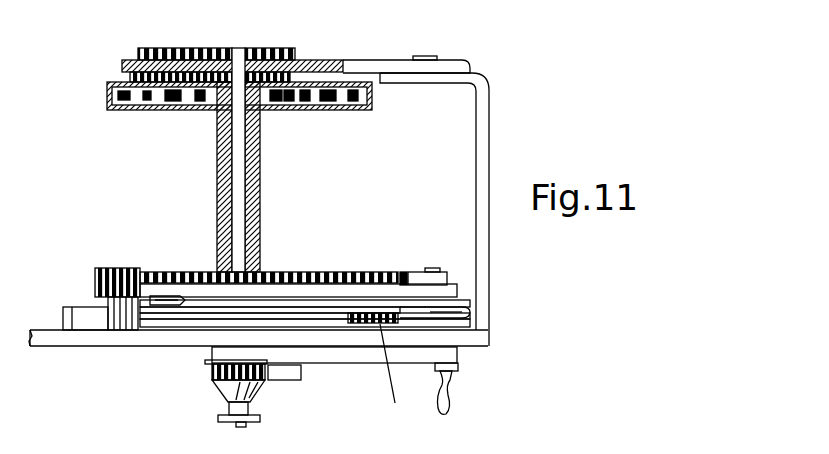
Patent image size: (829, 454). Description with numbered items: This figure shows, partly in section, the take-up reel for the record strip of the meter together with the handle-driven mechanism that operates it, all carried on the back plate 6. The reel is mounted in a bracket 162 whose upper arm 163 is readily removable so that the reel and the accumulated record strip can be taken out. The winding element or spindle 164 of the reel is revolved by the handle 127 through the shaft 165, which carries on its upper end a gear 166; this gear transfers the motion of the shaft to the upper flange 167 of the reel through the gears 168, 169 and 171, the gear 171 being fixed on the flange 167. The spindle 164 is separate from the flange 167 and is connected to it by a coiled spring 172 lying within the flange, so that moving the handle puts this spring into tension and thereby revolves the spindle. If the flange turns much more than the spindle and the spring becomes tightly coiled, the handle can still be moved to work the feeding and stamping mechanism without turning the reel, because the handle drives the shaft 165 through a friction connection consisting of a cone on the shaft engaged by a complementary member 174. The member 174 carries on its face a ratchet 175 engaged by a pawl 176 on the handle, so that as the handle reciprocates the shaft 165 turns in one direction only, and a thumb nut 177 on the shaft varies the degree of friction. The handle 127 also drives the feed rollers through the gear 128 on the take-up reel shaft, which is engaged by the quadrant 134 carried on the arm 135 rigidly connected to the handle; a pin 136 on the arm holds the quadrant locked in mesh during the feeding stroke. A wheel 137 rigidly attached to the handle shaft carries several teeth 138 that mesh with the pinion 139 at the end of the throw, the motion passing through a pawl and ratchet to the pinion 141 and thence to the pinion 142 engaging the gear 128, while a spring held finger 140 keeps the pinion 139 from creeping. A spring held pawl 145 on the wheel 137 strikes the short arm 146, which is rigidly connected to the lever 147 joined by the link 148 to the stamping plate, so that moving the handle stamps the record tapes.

The back plate 6 is at (131, 340).
The handle 127 is at (358, 364).
The gear 128 is at (342, 263).
The quadrant 134 is at (420, 280).
The arm 135 is at (418, 292).
The pin 136 is at (404, 272).
The wheel 137 is at (177, 318).
The teeth 138 is at (399, 376).
The pinion 139 is at (112, 332).
The spring held finger 140 is at (110, 313).
The pinion 141 is at (134, 270).
The pinion 142 is at (105, 268).
The spring held pawl 145 is at (397, 323).
The short arm 146 is at (423, 322).
The lever 147 is at (432, 312).
The link 148 is at (160, 288).
The bracket 162 is at (488, 122).
The upper arm 163 is at (392, 65).
The spindle 164 is at (260, 168).
The shaft 165 is at (235, 192).
The gear 166 is at (268, 49).
The upper flange 167 is at (108, 95).
The gear 168 is at (178, 41).
The gear 169 is at (133, 73).
The gear 171 is at (312, 58).
The coiled spring 172 is at (347, 97).
The complementary member 174 is at (227, 387).
The ratchet 175 is at (212, 372).
The pawl 176 is at (272, 381).
The thumb nut 177 is at (223, 418).